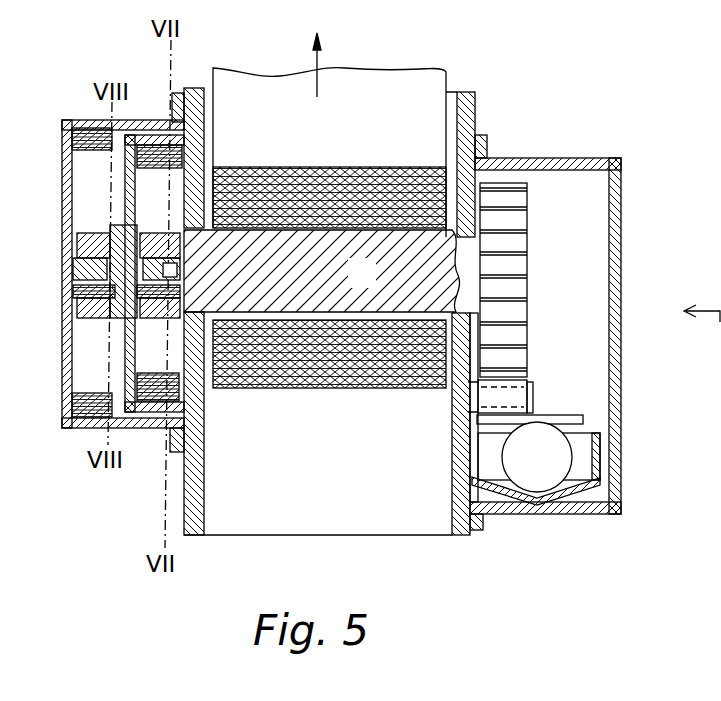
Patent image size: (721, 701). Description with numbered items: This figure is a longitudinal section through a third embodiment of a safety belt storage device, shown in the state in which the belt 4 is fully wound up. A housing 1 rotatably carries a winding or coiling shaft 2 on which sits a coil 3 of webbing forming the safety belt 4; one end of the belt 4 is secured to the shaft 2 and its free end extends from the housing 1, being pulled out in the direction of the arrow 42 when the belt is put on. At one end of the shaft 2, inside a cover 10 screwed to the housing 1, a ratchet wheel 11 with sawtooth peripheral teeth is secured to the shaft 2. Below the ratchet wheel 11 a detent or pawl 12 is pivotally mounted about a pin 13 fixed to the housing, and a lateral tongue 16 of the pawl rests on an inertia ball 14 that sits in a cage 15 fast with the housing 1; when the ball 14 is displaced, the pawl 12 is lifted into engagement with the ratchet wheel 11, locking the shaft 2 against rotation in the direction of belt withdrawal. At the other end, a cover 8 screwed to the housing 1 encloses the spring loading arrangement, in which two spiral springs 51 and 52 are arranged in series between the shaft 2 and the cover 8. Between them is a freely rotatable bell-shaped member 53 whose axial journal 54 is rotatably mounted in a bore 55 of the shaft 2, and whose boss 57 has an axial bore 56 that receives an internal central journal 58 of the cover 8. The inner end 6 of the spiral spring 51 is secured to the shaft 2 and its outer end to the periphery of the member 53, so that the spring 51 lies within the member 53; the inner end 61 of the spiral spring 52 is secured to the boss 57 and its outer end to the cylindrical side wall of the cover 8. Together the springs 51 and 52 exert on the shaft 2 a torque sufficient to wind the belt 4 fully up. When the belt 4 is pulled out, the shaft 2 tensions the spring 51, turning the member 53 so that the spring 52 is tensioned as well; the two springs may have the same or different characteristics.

The housing 1 is at (462, 113).
The winding or coiling shaft 2 is at (372, 287).
The coil of webbing 3 is at (257, 367).
The safety belt 4 is at (387, 80).
The inner end of spiral spring 6 is at (157, 297).
The cover 8 is at (70, 178).
The cover 10 is at (543, 160).
The ratchet wheel 11 is at (508, 263).
The detent or pawl 12 is at (508, 393).
The pin 13 is at (530, 402).
The ball 14 is at (554, 471).
The cage 15 is at (488, 453).
The lateral tongue 16 is at (573, 417).
The arrow 42 is at (315, 62).
The spiral spring 51 is at (177, 173).
The spiral spring 52 is at (88, 163).
The bell-shaped member 53 is at (135, 185).
The axial journal 54 is at (182, 260).
The bore 55 is at (182, 275).
The axial bore 56 is at (108, 287).
The boss 57 is at (104, 236).
The internal central journal 58 is at (88, 273).
The inner end of spiral spring 61 is at (90, 300).